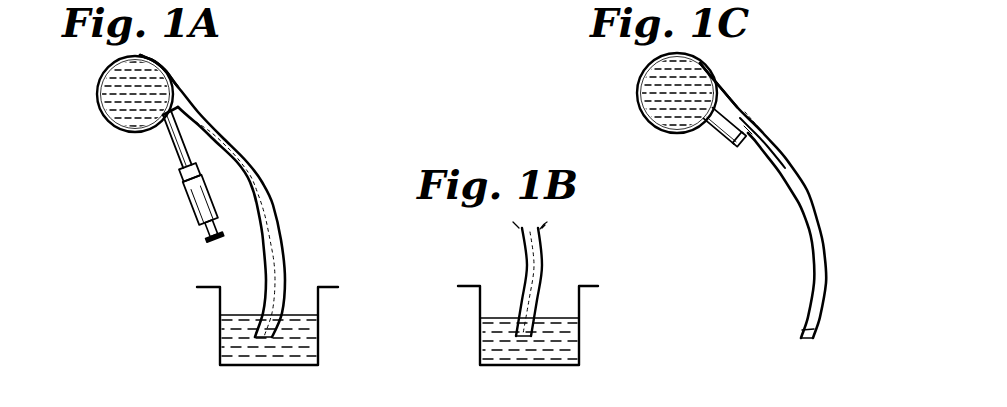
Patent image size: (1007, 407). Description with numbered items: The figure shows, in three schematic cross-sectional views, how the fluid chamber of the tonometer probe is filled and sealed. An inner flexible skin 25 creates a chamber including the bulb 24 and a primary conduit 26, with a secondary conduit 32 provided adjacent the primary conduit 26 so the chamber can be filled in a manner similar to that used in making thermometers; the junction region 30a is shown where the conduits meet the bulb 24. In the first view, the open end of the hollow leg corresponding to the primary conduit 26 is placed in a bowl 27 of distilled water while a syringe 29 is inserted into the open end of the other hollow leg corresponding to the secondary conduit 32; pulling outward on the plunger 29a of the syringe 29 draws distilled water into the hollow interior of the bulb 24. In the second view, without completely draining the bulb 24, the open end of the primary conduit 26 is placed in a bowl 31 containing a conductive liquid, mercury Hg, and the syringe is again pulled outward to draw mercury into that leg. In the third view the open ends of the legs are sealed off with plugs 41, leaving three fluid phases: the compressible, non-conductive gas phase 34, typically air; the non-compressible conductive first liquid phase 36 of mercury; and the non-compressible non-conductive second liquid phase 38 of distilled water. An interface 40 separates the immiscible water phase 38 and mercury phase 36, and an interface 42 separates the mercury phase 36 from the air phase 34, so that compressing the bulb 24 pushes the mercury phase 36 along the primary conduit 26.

In FIG. 1A, the bulb 24 is at (96, 108).
In FIG. 1C, the bulb 24 is at (637, 108).
In FIG. 1A, the inner flexible skin 25 is at (243, 129).
In FIG. 1A, the primary conduit 26 is at (278, 199).
In FIG. 1B, the primary conduit 26 is at (545, 262).
In FIG. 1A, the bowl of distilled water 27 is at (326, 320).
In FIG. 1A, the syringe 29 is at (182, 203).
In FIG. 1A, the plunger 29a is at (204, 228).
In FIG. 1A, the bulb neck junction 30a is at (194, 107).
In FIG. 1C, the bulb neck junction 30a is at (738, 100).
In FIG. 1B, the bowl containing conductive liquid 31 is at (590, 320).
In FIG. 1A, the secondary conduit 32 is at (162, 140).
In FIG. 1C, the secondary conduit 32 is at (706, 130).
In FIG. 1C, the gas phase 34 is at (821, 278).
In FIG. 1C, the first liquid phase 36 is at (757, 150).
In FIG. 1A, the second liquid phase 38 is at (122, 114).
In FIG. 1C, the second liquid phase 38 is at (658, 116).
In FIG. 1C, the interface 40 is at (750, 126).
In FIG. 1C, the plugs 41 is at (735, 150).
In FIG. 1C, the interface 42 is at (792, 162).
In FIG. 1B, the mercury Hg is at (507, 316).